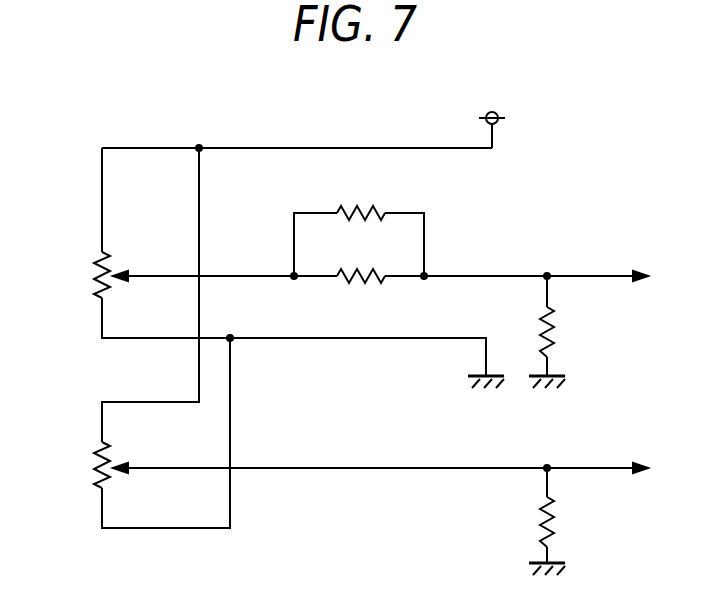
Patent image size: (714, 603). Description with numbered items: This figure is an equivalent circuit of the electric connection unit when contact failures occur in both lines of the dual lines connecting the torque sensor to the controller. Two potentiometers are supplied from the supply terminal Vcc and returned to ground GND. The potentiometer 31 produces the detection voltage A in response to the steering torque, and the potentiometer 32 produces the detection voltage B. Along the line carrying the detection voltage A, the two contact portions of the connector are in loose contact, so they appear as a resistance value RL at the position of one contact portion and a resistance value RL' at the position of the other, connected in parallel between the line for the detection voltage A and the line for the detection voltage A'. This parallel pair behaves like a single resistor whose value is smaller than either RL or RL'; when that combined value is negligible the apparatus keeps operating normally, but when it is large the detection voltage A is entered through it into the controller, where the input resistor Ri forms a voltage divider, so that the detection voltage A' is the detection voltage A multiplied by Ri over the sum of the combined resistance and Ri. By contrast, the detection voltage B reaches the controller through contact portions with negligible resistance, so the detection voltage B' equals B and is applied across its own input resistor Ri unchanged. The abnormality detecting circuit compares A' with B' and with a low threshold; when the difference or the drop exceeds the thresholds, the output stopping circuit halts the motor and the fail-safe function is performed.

The potentiometer 31 is at (96, 258).
The potentiometer 32 is at (96, 449).
The resistance value of contact portion 180d RL is at (361, 293).
The resistance value of contact portion 180c RL' is at (359, 225).
The input resistor Ri is at (557, 425).
The supply voltage Vcc is at (511, 129).
The ground GND is at (505, 400).
The detection voltage A is at (380, 259).
The detection voltage B is at (380, 452).